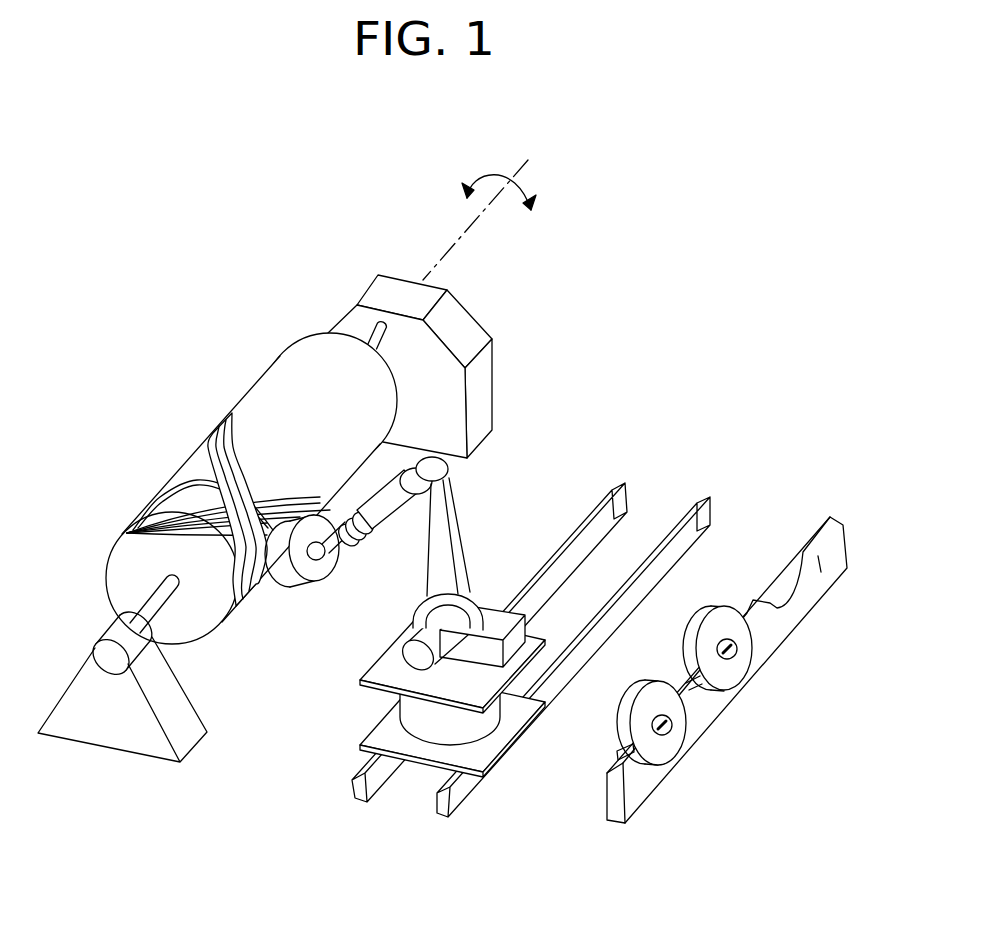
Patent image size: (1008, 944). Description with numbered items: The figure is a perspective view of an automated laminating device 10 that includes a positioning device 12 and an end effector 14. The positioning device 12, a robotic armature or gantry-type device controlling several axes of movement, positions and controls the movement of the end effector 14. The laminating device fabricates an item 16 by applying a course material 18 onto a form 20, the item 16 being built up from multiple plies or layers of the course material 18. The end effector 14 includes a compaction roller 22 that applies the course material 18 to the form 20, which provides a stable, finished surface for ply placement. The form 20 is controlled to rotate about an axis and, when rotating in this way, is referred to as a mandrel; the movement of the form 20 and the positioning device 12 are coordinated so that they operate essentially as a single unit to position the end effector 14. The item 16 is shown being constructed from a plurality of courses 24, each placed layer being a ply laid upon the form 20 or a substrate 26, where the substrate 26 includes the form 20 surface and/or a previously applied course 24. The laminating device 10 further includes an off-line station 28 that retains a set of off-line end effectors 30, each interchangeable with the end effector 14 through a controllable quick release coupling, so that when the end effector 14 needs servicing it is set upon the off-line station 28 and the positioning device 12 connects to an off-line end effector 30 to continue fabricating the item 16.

The laminating device 10 is at (629, 304).
The positioning device 12 is at (475, 530).
The end effector 14 is at (288, 580).
The item 16 is at (226, 372).
The course material 18 is at (173, 487).
The form 20 is at (122, 577).
The compaction roller 22 is at (672, 723).
The courses 24 is at (173, 515).
The substrate 26 is at (268, 457).
The off-line station 28 is at (847, 548).
The off-line end effectors 30 is at (690, 619).